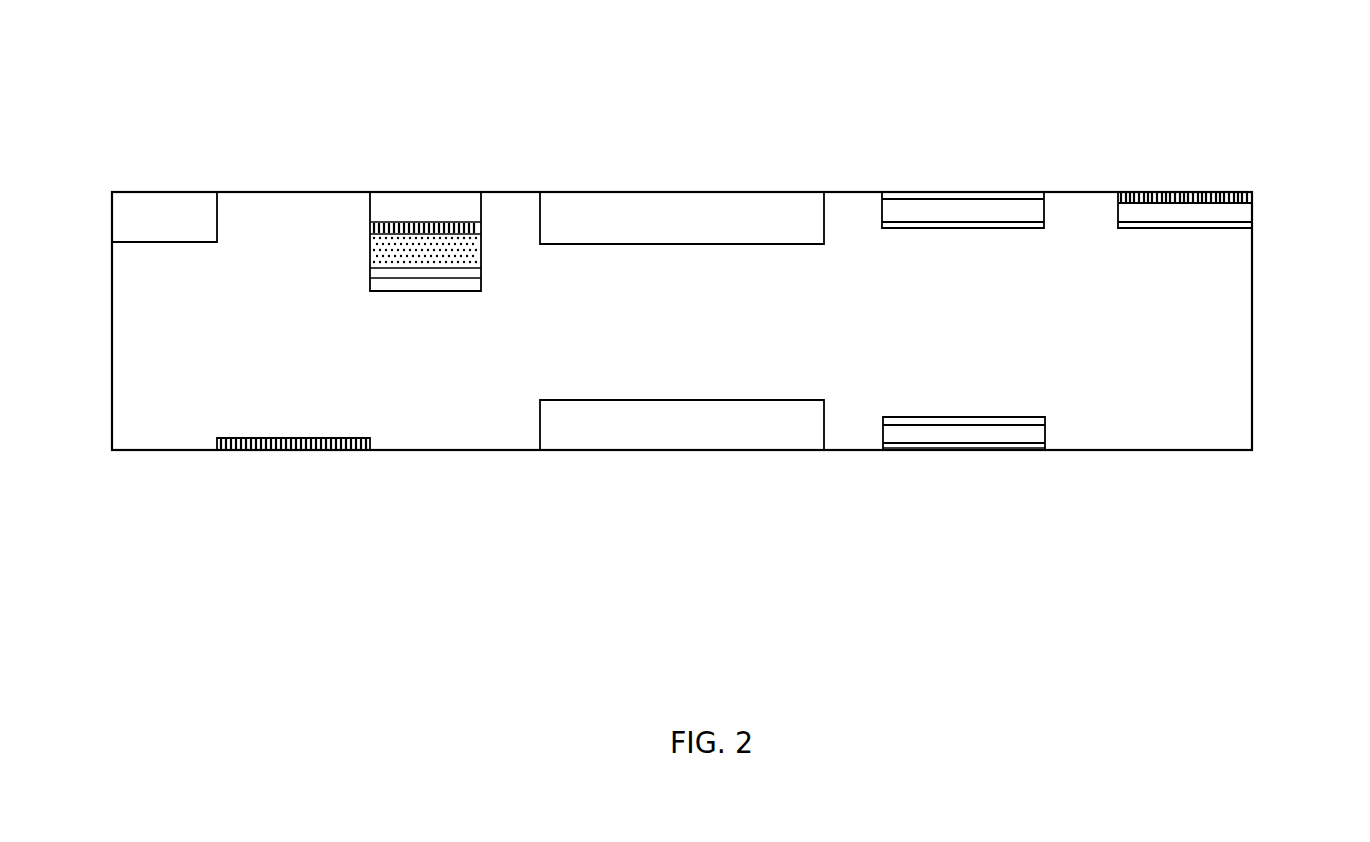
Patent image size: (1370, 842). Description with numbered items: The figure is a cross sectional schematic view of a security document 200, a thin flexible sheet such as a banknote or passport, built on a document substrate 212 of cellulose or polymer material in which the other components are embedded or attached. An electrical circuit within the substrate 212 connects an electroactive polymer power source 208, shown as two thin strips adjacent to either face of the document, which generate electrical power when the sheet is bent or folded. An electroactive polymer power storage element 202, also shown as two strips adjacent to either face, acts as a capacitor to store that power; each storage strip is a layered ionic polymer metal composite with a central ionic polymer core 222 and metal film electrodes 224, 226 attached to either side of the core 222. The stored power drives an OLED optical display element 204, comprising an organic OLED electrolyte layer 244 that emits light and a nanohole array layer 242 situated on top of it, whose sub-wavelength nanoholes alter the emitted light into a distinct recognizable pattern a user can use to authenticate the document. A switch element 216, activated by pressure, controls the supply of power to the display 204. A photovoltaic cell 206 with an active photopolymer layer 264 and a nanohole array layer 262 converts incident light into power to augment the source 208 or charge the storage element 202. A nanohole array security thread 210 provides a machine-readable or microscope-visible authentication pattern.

The security document 200 is at (1208, 478).
The electroactive polymer power storage element 202 is at (987, 354).
The OLED optical display element 204 is at (406, 197).
The photovoltaic cell 206 is at (1230, 181).
The electroactive polymer power source 208 is at (602, 208).
The nanohole array security thread 210 is at (323, 440).
The document substrate 212 is at (152, 418).
The switch element 216 is at (163, 232).
The ionic polymer core 222 is at (1037, 432).
The metal film electrode 224 is at (968, 420).
The metal film electrode 226 is at (908, 447).
The nanohole array layer 242 is at (481, 228).
The OLED electrolyte layer 244 is at (381, 254).
The nanohole array layer 262 is at (1238, 192).
The active photopolymer layer 264 is at (1200, 213).